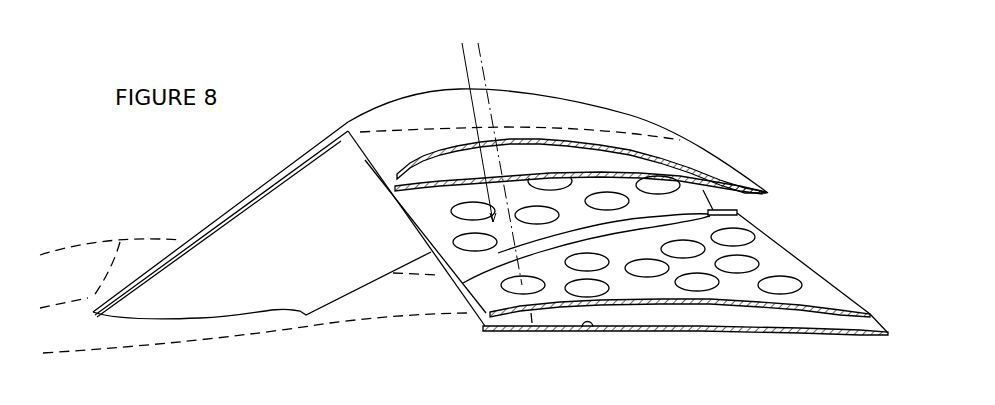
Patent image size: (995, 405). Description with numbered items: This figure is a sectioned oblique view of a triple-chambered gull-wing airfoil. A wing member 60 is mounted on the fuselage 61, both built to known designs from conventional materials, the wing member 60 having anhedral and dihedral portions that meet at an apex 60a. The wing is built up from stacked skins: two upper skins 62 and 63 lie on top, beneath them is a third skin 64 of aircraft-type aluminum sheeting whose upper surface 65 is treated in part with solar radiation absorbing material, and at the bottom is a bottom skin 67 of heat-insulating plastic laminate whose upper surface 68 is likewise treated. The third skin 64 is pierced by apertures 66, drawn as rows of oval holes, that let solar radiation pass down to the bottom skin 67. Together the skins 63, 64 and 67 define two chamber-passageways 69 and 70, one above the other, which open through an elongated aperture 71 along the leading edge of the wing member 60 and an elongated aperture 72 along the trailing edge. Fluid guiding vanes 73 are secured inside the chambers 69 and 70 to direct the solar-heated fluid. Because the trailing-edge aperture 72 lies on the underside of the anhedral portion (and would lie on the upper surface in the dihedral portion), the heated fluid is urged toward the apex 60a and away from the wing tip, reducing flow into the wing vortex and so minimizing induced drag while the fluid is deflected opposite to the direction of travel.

The wing member 60 is at (241, 170).
The apex 60a is at (530, 129).
The fuselage 61 is at (130, 242).
The upper skin 62 is at (430, 152).
The upper skin 63 is at (587, 178).
The third skin 64 is at (813, 293).
The upper surface 65 is at (737, 298).
The apertures 66 is at (492, 300).
The bottom skin 67 is at (657, 332).
The upper surface 68 is at (586, 330).
The chamber-passageway 69 is at (612, 185).
The chamber-passageway 70 is at (795, 320).
The aperture 71 is at (367, 160).
The aperture 72 is at (705, 192).
The fluid guiding vanes 73 is at (712, 217).